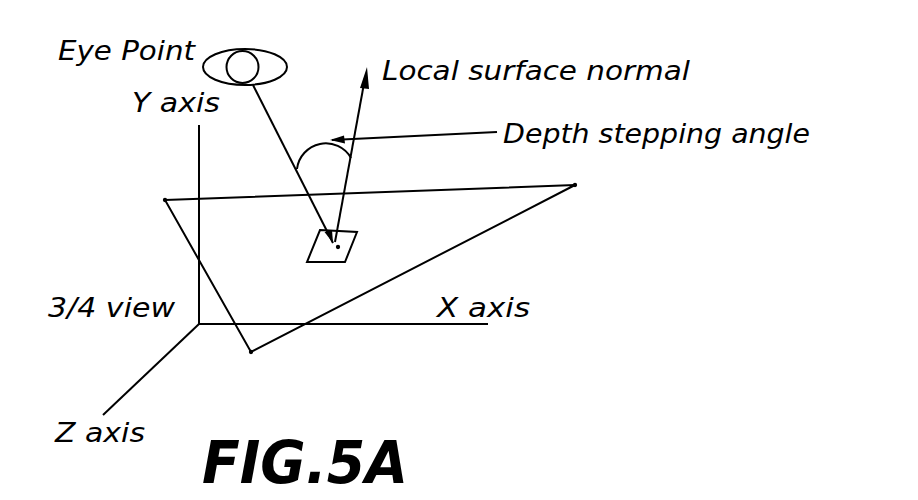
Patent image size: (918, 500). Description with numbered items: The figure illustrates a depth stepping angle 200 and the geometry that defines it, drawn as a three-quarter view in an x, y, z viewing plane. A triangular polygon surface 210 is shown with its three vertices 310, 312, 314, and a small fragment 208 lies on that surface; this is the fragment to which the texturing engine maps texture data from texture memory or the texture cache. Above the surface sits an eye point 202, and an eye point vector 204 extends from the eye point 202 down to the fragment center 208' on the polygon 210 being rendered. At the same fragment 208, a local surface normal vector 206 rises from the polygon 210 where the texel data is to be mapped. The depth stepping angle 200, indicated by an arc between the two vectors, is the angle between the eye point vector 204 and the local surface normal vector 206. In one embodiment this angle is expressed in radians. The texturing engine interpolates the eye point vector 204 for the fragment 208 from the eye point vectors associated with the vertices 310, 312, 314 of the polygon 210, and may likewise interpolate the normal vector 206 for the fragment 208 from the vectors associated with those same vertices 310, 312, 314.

The depth stepping angle 200 is at (327, 167).
The eye point 202 is at (247, 48).
The eye point vector 204 is at (265, 108).
The local surface normal vector 206 is at (361, 108).
The fragment 208 is at (313, 269).
The fragment center 208' is at (385, 235).
The polygon surface 210 is at (462, 246).
The vertex 310 is at (165, 200).
The vertex 312 is at (250, 356).
The vertex 314 is at (575, 185).